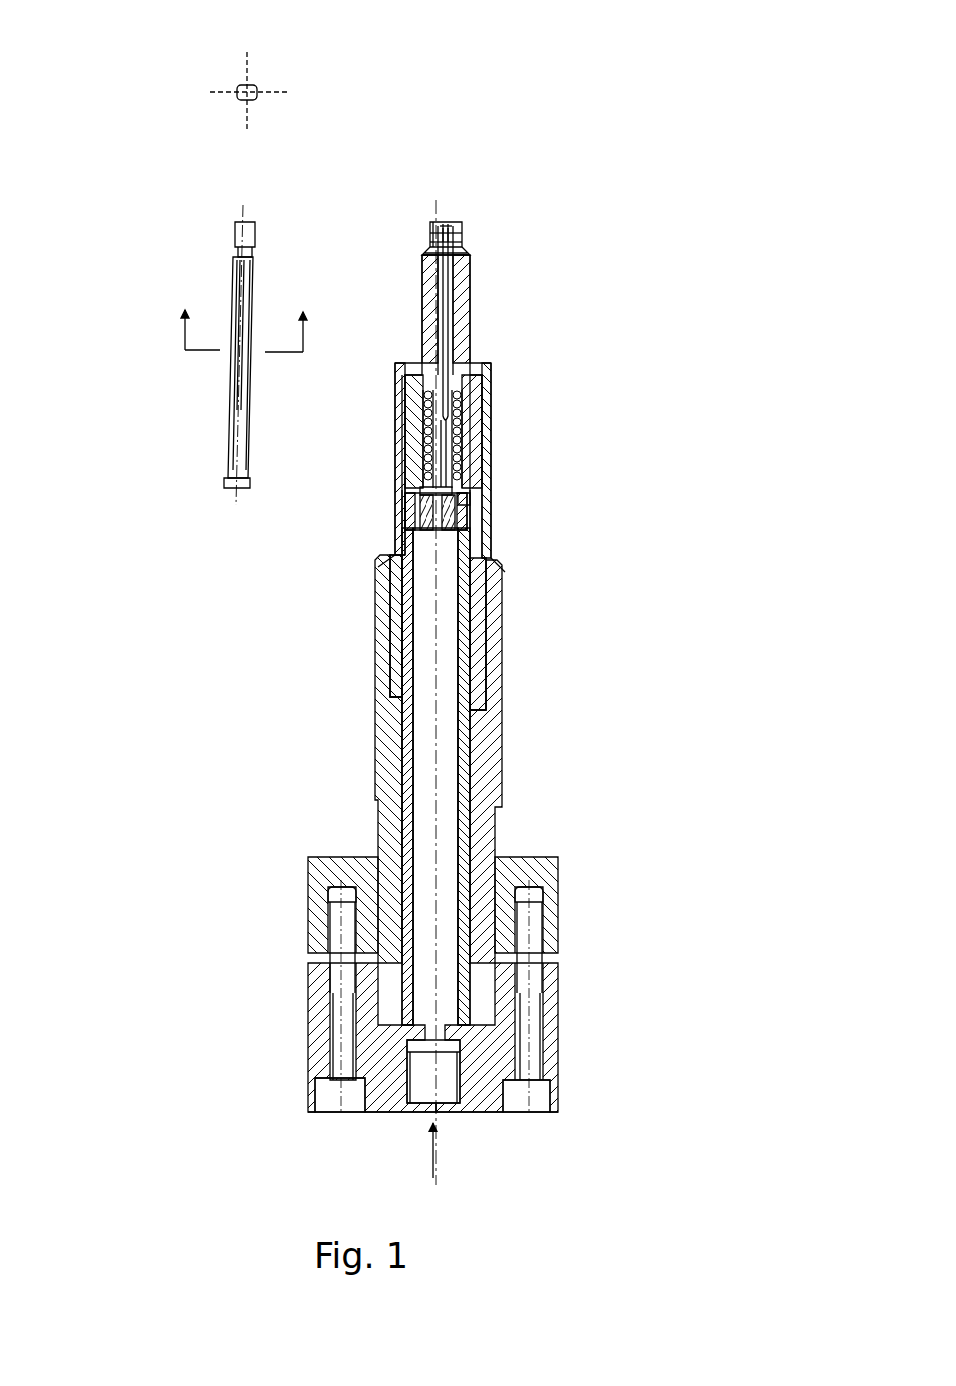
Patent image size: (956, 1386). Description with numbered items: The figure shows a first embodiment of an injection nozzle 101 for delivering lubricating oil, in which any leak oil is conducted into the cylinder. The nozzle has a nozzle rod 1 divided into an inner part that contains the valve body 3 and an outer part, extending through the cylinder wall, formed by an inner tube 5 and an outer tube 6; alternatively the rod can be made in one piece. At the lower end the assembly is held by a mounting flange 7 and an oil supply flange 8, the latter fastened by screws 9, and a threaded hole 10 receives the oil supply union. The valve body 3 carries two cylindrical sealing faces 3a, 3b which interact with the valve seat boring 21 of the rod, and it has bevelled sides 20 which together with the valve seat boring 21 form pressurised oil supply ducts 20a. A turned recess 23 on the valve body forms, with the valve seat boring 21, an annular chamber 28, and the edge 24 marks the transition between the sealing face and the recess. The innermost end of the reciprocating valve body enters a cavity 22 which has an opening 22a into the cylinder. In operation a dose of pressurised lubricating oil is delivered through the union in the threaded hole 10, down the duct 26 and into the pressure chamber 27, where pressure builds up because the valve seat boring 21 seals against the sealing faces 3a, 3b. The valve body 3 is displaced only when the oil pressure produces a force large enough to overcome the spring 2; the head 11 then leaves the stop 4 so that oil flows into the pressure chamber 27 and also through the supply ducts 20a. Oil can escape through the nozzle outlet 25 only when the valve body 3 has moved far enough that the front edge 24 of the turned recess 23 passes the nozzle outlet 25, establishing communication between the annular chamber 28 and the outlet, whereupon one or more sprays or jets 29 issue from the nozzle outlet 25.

The inner part of nozzle rod 1 is at (422, 335).
The spring 2 is at (492, 366).
The valve body 3 is at (478, 418).
The cylindrical sealing face on valve body 3a is at (470, 292).
The cylindrical sealing face on valve body 3b is at (452, 233).
The stop for valve body 4 is at (470, 515).
The inner tube 5 is at (462, 597).
The outer tube 6 is at (478, 643).
The mounting flange 7 is at (513, 895).
The oil supply flange 8 is at (549, 1029).
The screws for fastening oil supply flange 9 is at (537, 1107).
The threaded hole for oil supply union 10 is at (423, 1106).
The head of valve body 11 is at (447, 490).
The bevelled sides of valve body 20 is at (243, 85).
The pressurised oil supply ducts 20a is at (443, 307).
The valve seat boring 21 is at (453, 237).
The cavity for innermost end of reciprocating valve body 22 is at (452, 240).
The opening from cavity into cylinder 22a is at (457, 225).
The turned recess for oil supply 23 is at (422, 256).
The edge between sealing face and turned recess 24 is at (430, 246).
The nozzle outlet 25 is at (430, 232).
The duct for supplying lubricating oil to pressure chamber 26 is at (440, 752).
The pressure chamber 27 is at (420, 472).
The annular chamber 28 is at (457, 259).
The spray or jet 29 is at (433, 223).
The injection nozzle 101 is at (243, 940).